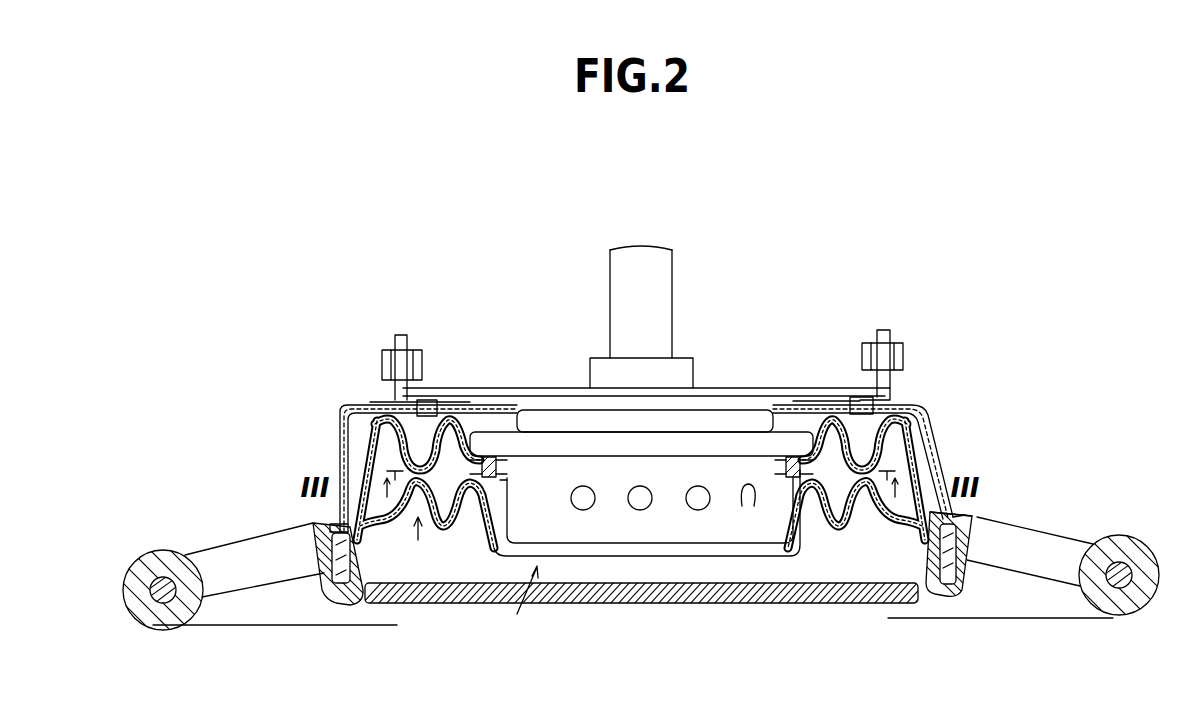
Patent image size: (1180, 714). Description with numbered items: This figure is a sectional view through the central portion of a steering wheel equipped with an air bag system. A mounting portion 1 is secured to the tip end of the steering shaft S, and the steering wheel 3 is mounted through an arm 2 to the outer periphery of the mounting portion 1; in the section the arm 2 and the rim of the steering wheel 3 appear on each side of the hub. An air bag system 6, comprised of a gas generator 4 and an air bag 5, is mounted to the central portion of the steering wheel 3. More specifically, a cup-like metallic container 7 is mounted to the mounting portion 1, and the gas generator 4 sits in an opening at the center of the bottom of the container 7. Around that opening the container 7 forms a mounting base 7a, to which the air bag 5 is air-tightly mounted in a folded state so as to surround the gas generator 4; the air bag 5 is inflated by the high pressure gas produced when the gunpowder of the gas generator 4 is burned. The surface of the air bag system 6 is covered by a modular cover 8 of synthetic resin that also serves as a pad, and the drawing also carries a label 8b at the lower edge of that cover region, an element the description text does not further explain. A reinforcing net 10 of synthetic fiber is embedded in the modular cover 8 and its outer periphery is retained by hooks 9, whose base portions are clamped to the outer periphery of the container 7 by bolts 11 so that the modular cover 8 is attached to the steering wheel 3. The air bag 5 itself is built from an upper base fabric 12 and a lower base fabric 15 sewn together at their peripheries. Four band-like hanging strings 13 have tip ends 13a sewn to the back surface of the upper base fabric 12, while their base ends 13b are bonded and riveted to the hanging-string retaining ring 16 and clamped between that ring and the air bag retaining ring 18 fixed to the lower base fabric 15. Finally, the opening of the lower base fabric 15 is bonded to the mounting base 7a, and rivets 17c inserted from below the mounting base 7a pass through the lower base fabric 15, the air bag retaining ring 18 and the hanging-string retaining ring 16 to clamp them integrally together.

The mounting portion 1 is at (343, 408).
The arm 2 is at (246, 549).
The steering wheel 3 is at (163, 630).
The gas generator 4 is at (670, 495).
The air bag 5 is at (418, 546).
The air bag system 6 is at (521, 607).
The container 7 is at (522, 391).
The mounting base 7a is at (517, 456).
The modular cover 8 is at (598, 605).
The base plate flange 8b is at (361, 590).
The hooks 9 is at (358, 563).
The reinforcing net 10 is at (332, 593).
The bolts 11 is at (950, 511).
The upper base fabric 12 is at (494, 552).
The hanging strings 13 is at (373, 452).
The tip ends of hanging strings 13a is at (824, 487).
The base ends of hanging strings 13b is at (781, 470).
The lower base fabric 15 is at (397, 404).
The hanging-string retaining ring 16 is at (505, 481).
The rivets 17c is at (792, 478).
The air bag retaining ring 18 is at (505, 468).
The steering shaft S is at (658, 297).